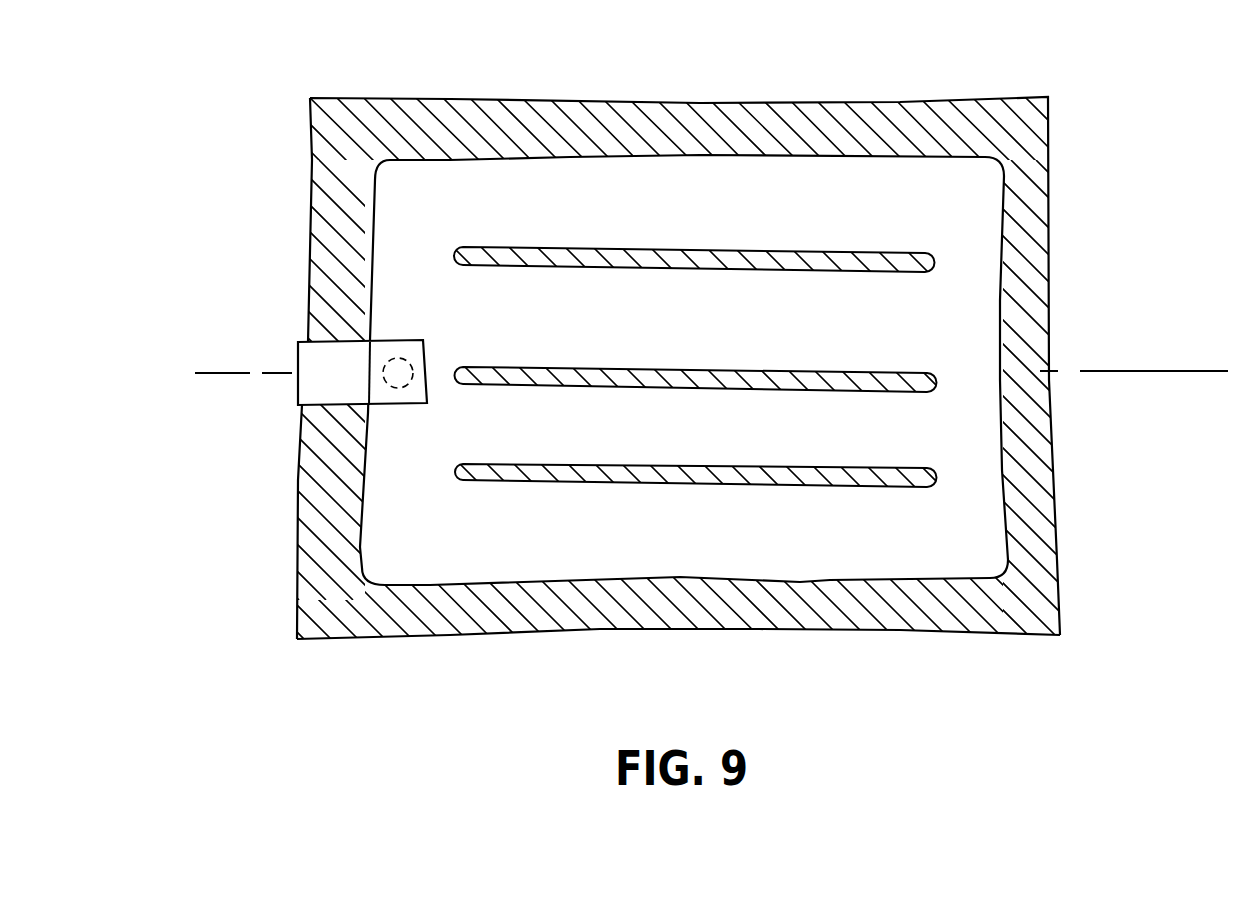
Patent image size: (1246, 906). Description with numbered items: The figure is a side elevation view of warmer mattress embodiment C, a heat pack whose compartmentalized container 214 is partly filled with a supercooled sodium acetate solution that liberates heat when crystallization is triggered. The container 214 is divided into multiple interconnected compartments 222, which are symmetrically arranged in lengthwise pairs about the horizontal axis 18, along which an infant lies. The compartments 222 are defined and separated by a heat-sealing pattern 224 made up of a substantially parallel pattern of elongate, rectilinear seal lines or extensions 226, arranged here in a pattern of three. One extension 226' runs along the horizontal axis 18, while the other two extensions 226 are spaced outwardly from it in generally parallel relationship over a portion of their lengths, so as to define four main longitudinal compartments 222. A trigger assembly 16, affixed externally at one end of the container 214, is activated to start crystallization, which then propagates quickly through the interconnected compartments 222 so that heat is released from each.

The compartmentalized container 214 is at (1050, 155).
The interconnected compartments 222 is at (557, 203).
The heat-sealing pattern 224 is at (405, 638).
The seal lines or extensions 226 is at (688, 272).
The central seal extension 226' is at (778, 325).
The trigger assembly 16 is at (285, 405).
The horizontal axis 18 is at (1170, 371).
The warmer mattress embodiment C is at (1089, 410).